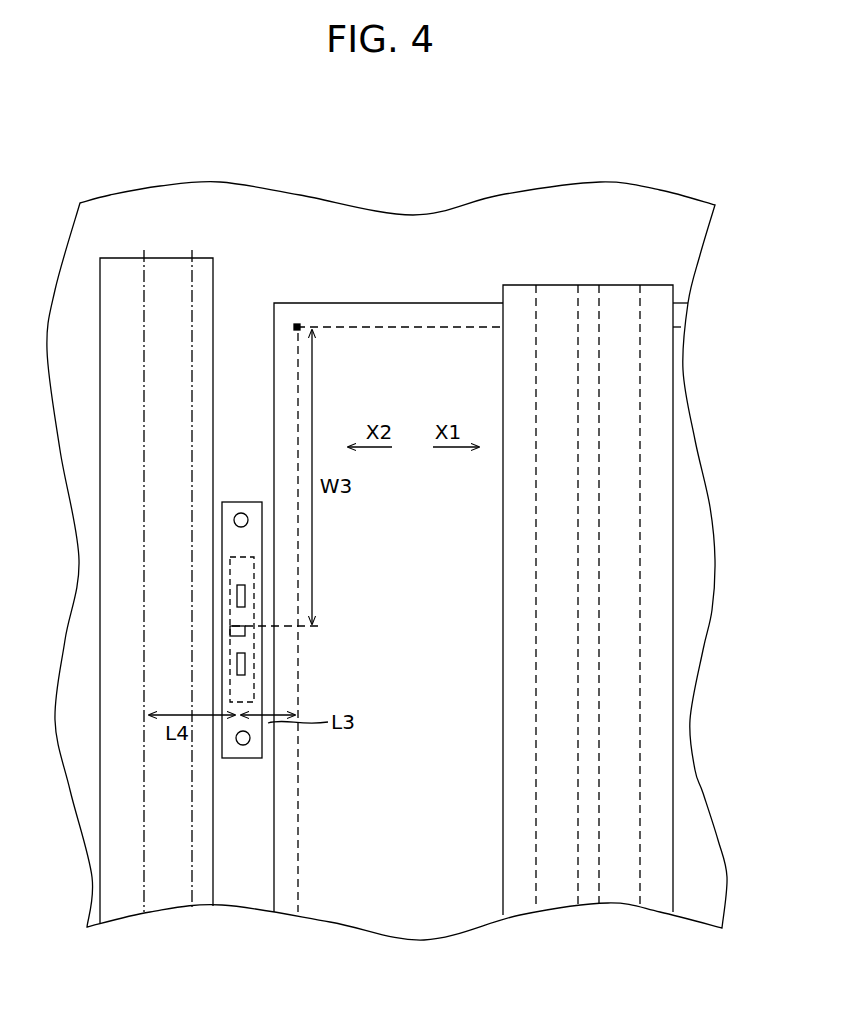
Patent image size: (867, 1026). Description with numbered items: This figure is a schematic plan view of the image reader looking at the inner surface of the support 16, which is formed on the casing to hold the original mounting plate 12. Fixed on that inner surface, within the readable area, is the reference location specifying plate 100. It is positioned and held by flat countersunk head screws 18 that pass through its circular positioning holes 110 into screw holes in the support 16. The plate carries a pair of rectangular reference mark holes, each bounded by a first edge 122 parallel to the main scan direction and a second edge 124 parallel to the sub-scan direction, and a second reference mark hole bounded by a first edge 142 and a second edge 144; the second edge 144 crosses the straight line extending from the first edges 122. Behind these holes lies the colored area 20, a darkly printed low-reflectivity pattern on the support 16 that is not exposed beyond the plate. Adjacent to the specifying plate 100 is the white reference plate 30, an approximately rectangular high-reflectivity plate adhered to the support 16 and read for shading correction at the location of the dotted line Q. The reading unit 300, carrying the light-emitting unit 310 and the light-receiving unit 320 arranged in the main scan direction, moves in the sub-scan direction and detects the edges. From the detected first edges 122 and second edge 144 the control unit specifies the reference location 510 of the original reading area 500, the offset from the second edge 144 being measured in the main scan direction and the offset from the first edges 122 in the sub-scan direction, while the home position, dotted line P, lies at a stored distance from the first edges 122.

The original mounting plate 12 is at (468, 303).
The support 16 is at (422, 223).
The flat countersunk head screws 18 is at (244, 513).
The colored area 20 is at (232, 555).
The white reference plate 30 is at (213, 272).
The reference location specifying plate 100 is at (289, 629).
The positioning holes 110 is at (240, 515).
The first edge 122 is at (237, 600).
The second edge 124 is at (237, 585).
The first edge 142 is at (232, 632).
The second edge 144 is at (231, 626).
The reading unit 300 is at (589, 570).
The light-emitting unit 310 is at (536, 502).
The light-receiving unit 320 is at (640, 502).
The original reading area 500 is at (370, 325).
The reference location 510 is at (298, 323).